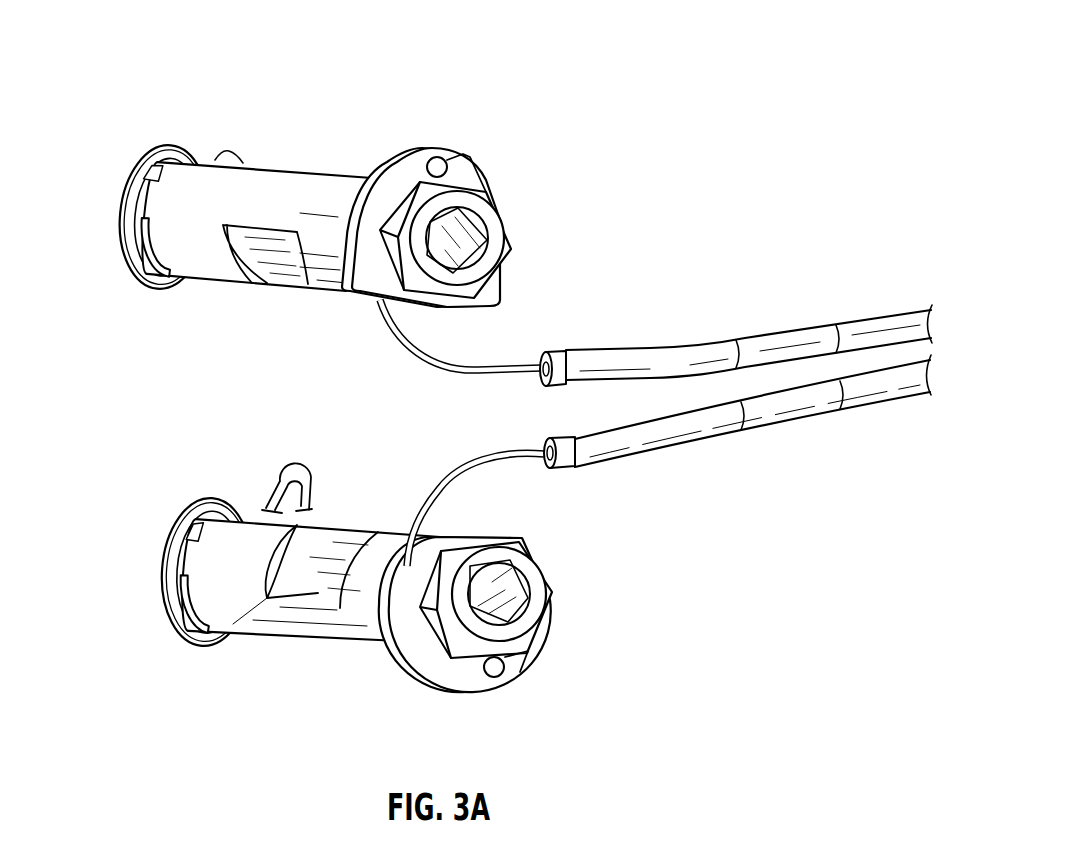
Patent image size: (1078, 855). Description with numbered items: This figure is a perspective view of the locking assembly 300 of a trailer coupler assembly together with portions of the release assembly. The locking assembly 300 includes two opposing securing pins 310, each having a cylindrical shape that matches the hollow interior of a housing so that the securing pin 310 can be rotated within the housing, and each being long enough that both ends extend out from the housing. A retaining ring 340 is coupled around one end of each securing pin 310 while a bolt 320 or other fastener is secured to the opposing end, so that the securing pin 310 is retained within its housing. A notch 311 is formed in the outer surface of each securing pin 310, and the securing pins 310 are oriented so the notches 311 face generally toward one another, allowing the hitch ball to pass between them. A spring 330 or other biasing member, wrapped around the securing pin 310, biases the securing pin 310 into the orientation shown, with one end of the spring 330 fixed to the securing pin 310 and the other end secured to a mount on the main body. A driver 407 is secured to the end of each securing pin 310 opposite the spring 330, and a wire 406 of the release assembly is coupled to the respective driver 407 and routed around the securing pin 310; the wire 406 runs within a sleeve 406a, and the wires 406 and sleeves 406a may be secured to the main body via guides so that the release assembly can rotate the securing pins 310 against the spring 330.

The locking assembly 300 is at (107, 50).
The securing pin 310 is at (293, 185).
The notch 311 is at (278, 267).
The bolt 320 is at (495, 220).
The spring 330 is at (133, 173).
The retaining ring 340 is at (137, 212).
The wire 406 is at (490, 372).
The sleeve 406a is at (675, 350).
The driver 407 is at (412, 163).